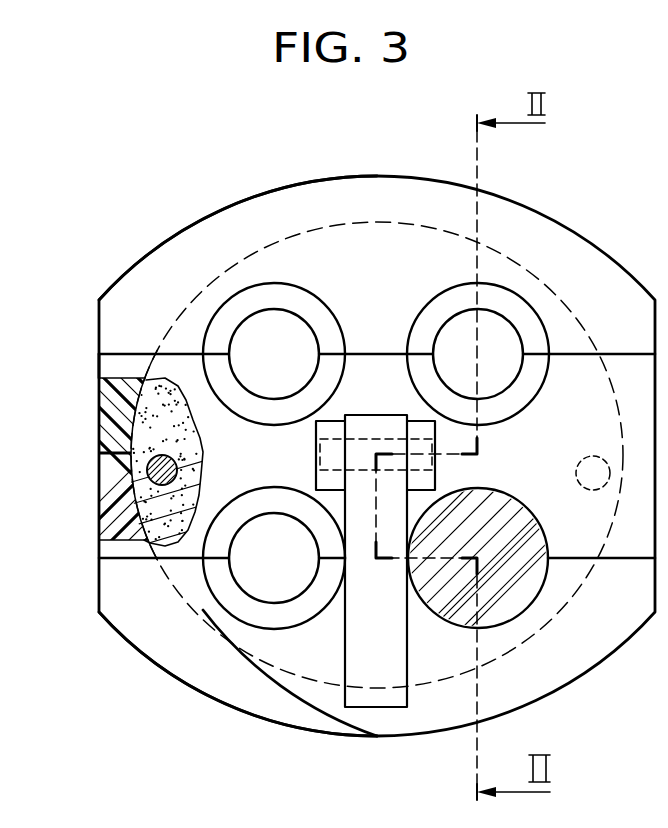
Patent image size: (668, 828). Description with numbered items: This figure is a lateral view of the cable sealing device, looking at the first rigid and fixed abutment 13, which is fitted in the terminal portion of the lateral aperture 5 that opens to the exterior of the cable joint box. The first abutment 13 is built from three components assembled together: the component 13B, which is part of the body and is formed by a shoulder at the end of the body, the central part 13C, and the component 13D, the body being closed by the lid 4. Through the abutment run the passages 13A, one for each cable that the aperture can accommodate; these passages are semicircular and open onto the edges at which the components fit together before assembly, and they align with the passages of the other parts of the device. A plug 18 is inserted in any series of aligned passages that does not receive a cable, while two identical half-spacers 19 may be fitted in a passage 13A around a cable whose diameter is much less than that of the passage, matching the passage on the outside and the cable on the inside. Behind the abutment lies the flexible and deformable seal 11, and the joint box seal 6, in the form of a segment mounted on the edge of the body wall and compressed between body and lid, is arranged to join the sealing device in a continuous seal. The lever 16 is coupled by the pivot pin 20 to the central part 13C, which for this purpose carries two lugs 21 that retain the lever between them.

The first rigid and fixed abutment 13 is at (548, 209).
The passage 13A is at (262, 617).
The component of the first fixed abutment 13B is at (142, 628).
The central part of the first abutment 13C is at (115, 367).
The component of the first fixed abutment 13D is at (133, 300).
The lid 4 is at (105, 412).
The lateral aperture 5 is at (116, 518).
The joint box seal 6 is at (135, 468).
The seal 11 is at (176, 436).
The lever 16 is at (386, 677).
The plug 18 is at (503, 520).
The half-spacer 19 is at (293, 612).
The pivot pin 20 is at (320, 472).
The lug 21 is at (333, 425).